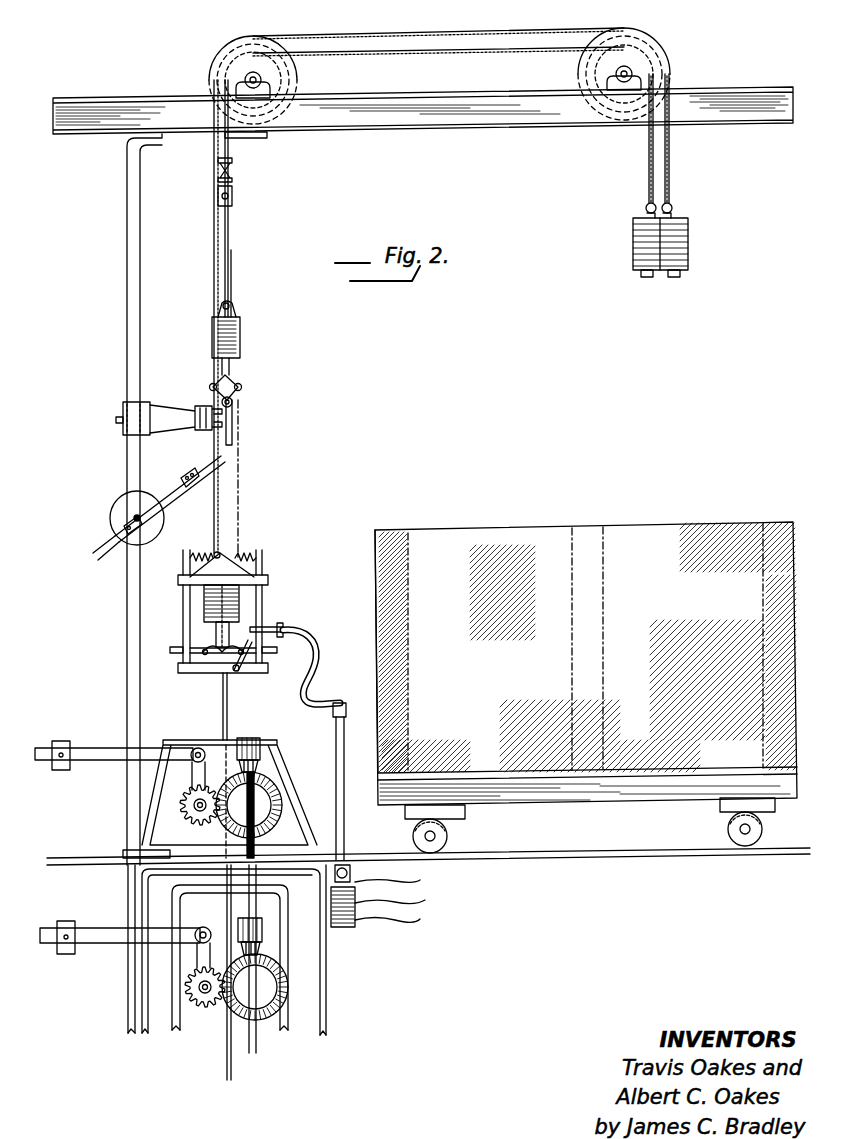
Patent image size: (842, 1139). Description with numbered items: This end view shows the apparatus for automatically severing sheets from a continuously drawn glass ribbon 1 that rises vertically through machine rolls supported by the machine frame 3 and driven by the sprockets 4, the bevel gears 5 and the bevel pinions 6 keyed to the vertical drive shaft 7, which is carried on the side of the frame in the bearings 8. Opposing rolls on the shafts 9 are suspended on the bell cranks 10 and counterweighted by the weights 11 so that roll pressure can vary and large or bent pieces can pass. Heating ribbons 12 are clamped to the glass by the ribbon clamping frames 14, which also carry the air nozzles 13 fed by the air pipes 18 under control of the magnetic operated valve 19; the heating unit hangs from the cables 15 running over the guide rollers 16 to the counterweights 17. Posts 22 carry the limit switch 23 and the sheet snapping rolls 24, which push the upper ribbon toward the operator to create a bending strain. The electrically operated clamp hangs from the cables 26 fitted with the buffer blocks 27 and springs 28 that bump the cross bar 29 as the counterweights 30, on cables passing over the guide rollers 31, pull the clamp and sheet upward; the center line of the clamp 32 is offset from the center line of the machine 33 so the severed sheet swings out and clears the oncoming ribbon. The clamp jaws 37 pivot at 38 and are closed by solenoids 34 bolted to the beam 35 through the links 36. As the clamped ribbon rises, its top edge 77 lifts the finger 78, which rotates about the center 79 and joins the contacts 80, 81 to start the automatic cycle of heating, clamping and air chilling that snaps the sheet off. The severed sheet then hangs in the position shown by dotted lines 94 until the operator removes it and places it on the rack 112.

The continuously formed ribbon 1 is at (223, 688).
The machine frame 3 is at (322, 942).
The sprockets 4 is at (186, 782).
The bevel gears 5 is at (284, 806).
The bevel pinions 6 is at (263, 768).
The vertical drive shaft 7 is at (257, 848).
The bearings 8 is at (261, 747).
The shafts 9 is at (194, 806).
The bell cranks 10 is at (115, 747).
The weights 11 is at (62, 740).
The heating ribbons 12 is at (237, 669).
The air nozzles 13 is at (260, 630).
The ribbon clamping frames 14 is at (192, 579).
The cables 15 is at (402, 34).
The guide rollers 16 is at (242, 44).
The counterweights 17 is at (690, 246).
The air pipes 18 is at (338, 760).
The magnetic operated valve 19 is at (400, 902).
The posts 22 is at (127, 245).
The limit switch 23 is at (104, 520).
The sheet snapping rolls 24 is at (212, 404).
The cables 26 is at (482, 52).
The buffer blocks 27 is at (233, 199).
The springs 28 is at (233, 170).
The cross bar 29 is at (262, 138).
The counterweights 30 is at (633, 240).
The guide rollers 31 is at (226, 66).
The center line of the clamp 32 is at (233, 284).
The center line of the machine 33 is at (262, 562).
The solenoids 34 is at (241, 334).
The beam 35 is at (236, 308).
The links 36 is at (239, 380).
The clamp jaws 37 is at (234, 418).
The pivot 38 is at (233, 396).
The top edge 77 is at (330, 394).
The finger 78 is at (206, 466).
The center 79 is at (126, 541).
The contact 80 is at (166, 513).
The contact 81 is at (125, 531).
The dotted lines showing severed sheet position 94 is at (241, 460).
The rack 112 is at (650, 788).